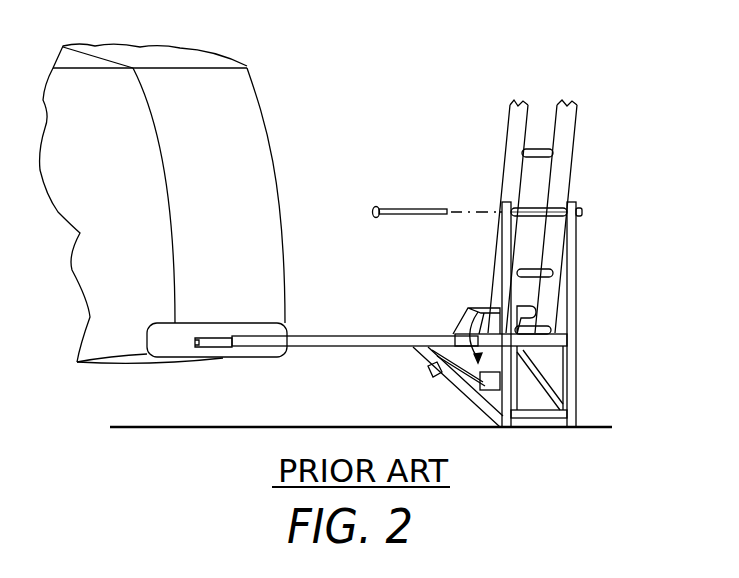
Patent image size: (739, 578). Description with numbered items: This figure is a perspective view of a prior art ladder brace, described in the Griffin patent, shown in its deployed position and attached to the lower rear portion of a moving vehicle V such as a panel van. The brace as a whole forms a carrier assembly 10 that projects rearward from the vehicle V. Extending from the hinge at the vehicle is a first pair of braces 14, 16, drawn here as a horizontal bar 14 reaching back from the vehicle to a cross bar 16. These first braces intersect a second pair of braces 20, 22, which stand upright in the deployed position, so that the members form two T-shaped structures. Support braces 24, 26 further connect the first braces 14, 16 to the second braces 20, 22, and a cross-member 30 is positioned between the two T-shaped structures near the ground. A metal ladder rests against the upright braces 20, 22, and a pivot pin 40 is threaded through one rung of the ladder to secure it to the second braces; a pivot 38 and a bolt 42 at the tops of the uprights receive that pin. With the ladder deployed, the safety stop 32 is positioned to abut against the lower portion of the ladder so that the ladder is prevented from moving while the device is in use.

The prior art ladder carrier assembly 10 is at (507, 263).
The first brace 14 is at (380, 343).
The first brace 16 is at (560, 332).
The second brace 20 is at (504, 257).
The second brace 22 is at (571, 252).
The support brace 24 is at (478, 401).
The support brace 26 is at (550, 392).
The cross-member 30 is at (575, 420).
The safety stop 32 is at (545, 362).
The pivot pin 38 is at (503, 212).
The pivot pin 40 is at (420, 210).
The bolt 42 is at (583, 212).
The vehicle V is at (227, 202).